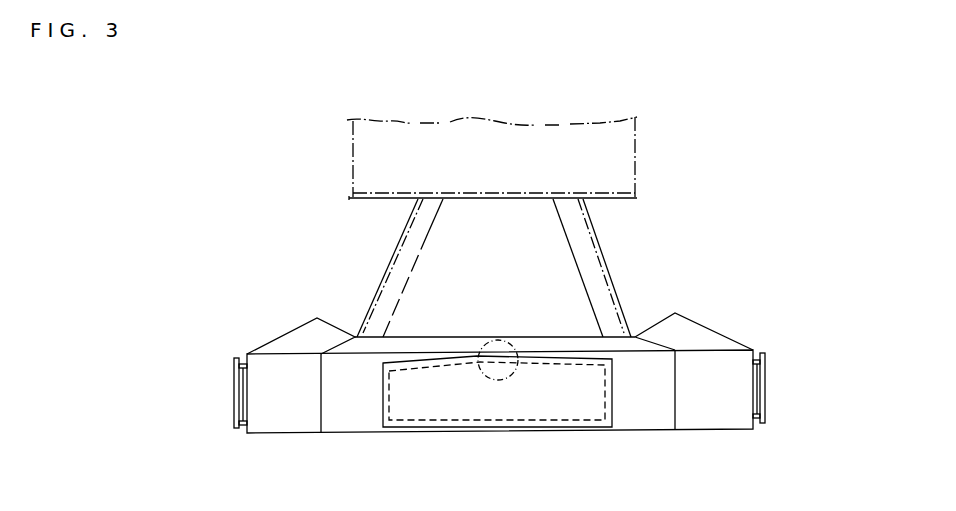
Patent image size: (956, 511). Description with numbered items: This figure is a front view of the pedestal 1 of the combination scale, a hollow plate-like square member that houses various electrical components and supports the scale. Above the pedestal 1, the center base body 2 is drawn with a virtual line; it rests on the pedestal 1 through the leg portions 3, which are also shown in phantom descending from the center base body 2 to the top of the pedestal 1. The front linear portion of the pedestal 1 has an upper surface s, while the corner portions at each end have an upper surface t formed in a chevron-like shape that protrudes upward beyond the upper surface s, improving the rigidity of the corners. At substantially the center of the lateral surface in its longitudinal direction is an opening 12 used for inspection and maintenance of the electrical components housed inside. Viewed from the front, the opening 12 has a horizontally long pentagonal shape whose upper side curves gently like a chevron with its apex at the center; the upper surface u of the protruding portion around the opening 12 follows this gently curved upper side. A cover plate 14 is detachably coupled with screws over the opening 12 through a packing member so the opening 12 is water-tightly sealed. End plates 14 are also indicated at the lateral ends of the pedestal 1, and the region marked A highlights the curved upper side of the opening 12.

The pedestal 1 is at (649, 434).
The center base body 2 is at (637, 133).
The leg portions 3 is at (392, 248).
The opening 12 is at (408, 400).
The cover plate 14 is at (233, 396).
The upper surface of the protruding portion u is at (243, 354).
The upper surface of the corner portion t is at (301, 326).
The upper surface of the linear portion S is at (436, 339).
The detail A is at (508, 341).